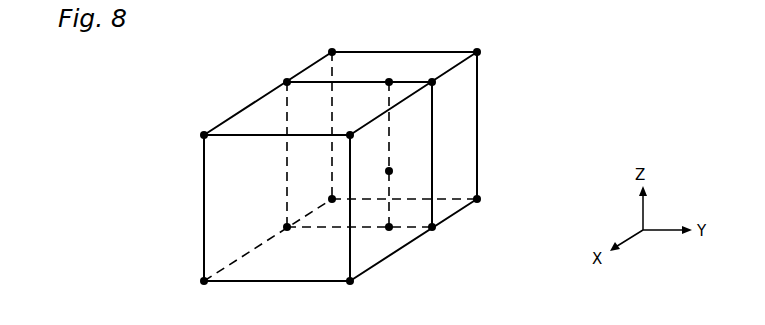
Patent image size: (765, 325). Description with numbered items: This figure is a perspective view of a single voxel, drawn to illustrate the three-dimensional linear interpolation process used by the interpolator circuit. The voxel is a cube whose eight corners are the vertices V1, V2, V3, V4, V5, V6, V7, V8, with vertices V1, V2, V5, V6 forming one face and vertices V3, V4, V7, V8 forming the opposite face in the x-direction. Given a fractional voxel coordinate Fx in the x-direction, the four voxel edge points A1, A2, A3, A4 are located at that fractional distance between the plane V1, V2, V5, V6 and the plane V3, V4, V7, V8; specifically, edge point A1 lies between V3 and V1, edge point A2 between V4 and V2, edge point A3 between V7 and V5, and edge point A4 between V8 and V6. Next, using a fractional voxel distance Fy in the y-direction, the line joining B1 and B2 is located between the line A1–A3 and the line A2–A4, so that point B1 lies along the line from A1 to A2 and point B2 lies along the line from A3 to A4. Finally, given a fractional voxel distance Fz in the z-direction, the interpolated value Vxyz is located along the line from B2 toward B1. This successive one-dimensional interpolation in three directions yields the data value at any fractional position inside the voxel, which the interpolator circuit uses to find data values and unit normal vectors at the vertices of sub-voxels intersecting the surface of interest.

The voxel vertex V1 is at (203, 134).
The voxel vertex V2 is at (350, 133).
The voxel vertex V3 is at (331, 50).
The voxel vertex V4 is at (479, 52).
The voxel vertex V5 is at (203, 280).
The voxel vertex V6 is at (352, 281).
The voxel vertex V7 is at (330, 198).
The voxel vertex V8 is at (479, 200).
The voxel edge point A1 is at (285, 82).
The voxel edge point A2 is at (434, 82).
The voxel edge point A3 is at (285, 226).
The voxel edge point A4 is at (433, 229).
The interpolated line endpoint B1 is at (390, 80).
The interpolated line endpoint B2 is at (389, 229).
The interpolated value Vxyz is at (391, 171).